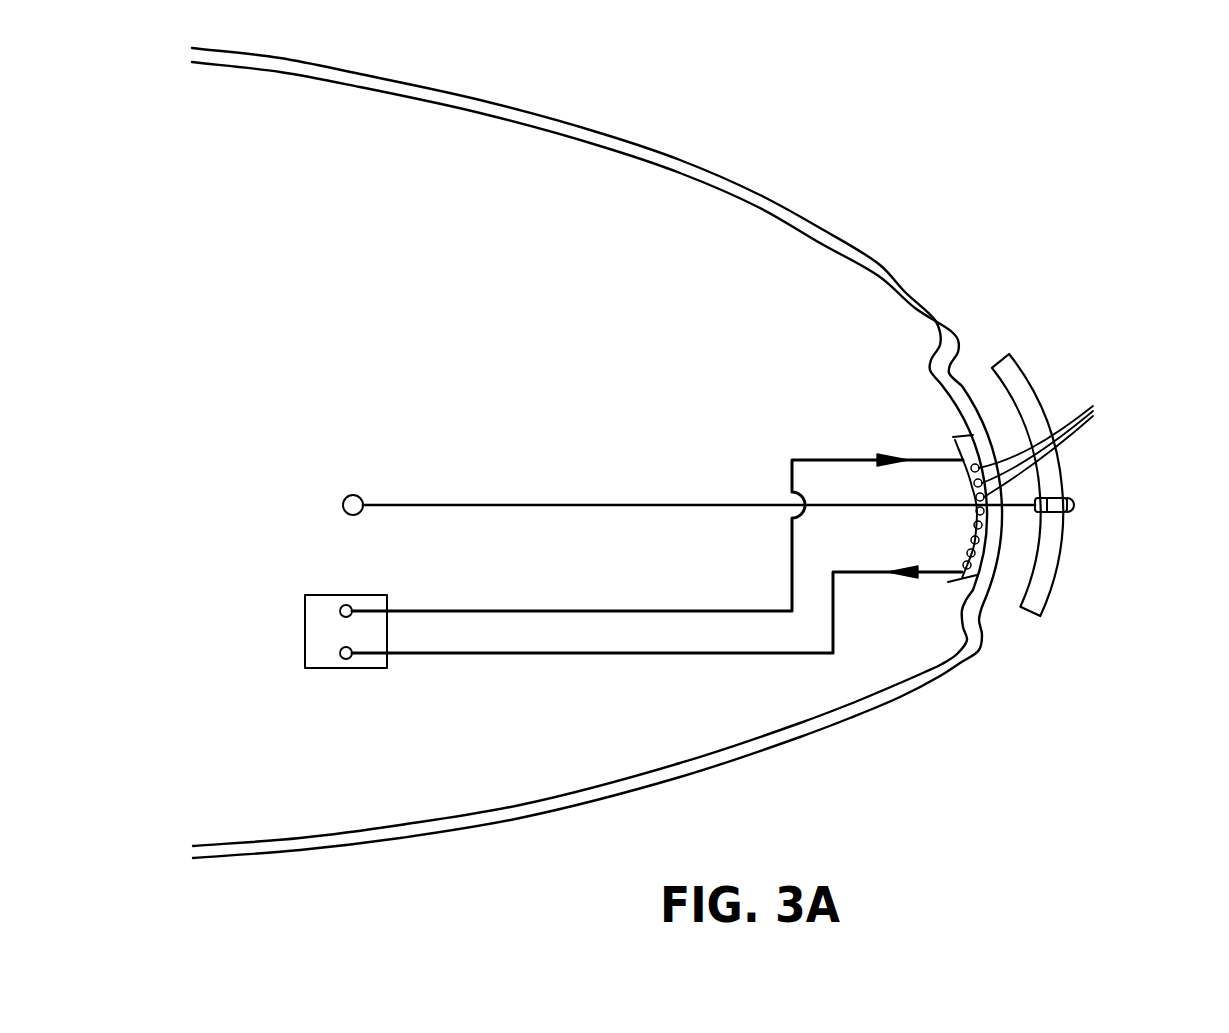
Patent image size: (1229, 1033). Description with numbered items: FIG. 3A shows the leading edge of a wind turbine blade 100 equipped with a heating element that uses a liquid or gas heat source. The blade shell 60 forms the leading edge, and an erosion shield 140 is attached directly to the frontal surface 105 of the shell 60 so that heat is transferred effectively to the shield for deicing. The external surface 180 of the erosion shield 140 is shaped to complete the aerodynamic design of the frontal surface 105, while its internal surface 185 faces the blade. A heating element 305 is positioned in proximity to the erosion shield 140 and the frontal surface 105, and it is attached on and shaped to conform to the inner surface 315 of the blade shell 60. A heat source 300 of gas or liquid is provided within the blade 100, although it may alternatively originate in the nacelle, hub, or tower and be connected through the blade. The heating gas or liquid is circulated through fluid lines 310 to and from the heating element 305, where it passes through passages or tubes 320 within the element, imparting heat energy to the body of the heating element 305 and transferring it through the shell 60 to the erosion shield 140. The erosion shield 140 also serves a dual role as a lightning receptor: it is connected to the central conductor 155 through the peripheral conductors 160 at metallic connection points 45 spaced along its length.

The blade 100 is at (774, 71).
The blade shell 60 is at (850, 243).
The frontal surface 105 is at (958, 380).
The erosion shield 140 is at (992, 367).
The external surface 180 is at (1042, 612).
The internal surface 185 is at (1030, 600).
The heating element 305 is at (957, 437).
The passages or tubes 320 is at (1061, 445).
The peripheral conductors 160 is at (643, 498).
The central conductor 155 is at (354, 495).
The metallic connection points 45 is at (1073, 493).
The heat source 300 is at (318, 668).
The fluid lines 310 is at (657, 655).
The inner surface 315 is at (963, 603).